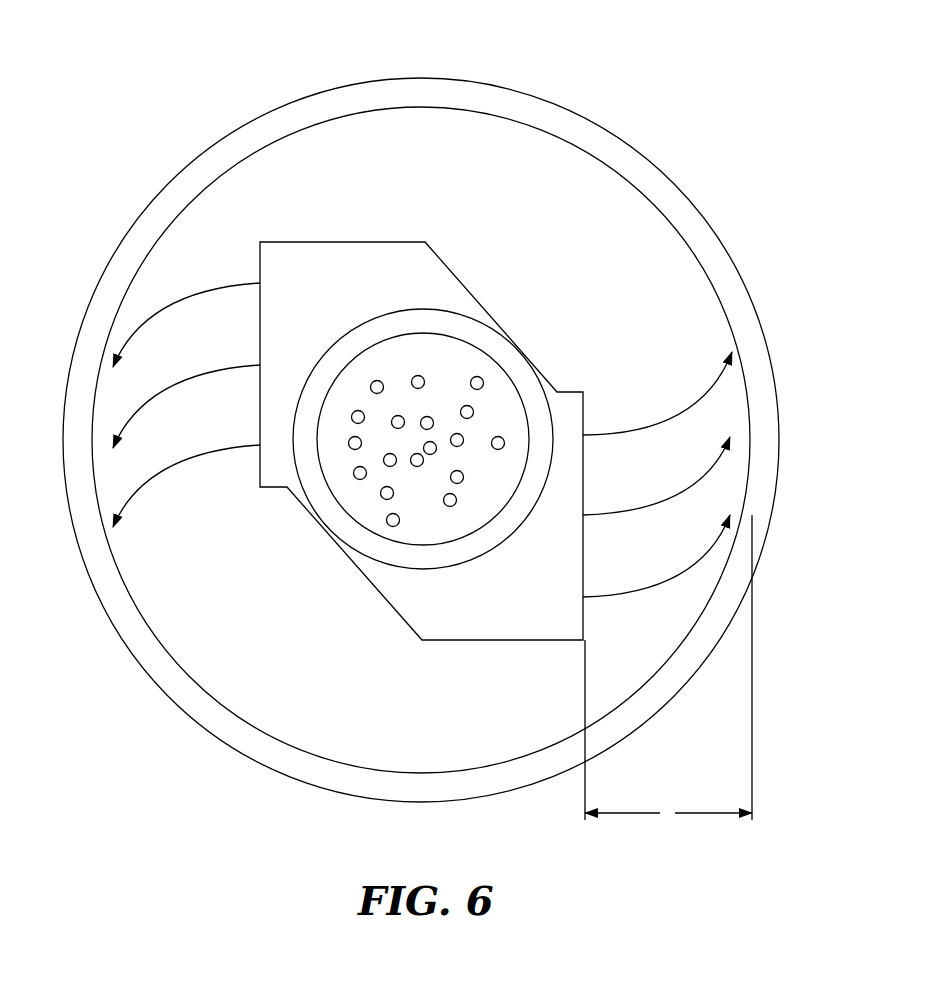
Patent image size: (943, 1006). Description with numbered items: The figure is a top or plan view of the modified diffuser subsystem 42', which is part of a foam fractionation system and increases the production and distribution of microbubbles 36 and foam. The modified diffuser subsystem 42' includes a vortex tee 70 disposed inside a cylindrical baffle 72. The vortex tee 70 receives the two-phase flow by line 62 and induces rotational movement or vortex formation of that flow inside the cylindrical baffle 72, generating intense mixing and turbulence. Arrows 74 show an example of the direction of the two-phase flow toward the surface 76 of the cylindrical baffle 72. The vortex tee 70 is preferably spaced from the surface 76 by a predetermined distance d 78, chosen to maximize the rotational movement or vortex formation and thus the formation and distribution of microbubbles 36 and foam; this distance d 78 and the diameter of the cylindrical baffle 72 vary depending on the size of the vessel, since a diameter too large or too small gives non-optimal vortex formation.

The modified diffuser subsystem 42' is at (549, 44).
The cylindrical baffle 72 is at (158, 193).
The surface 76 is at (660, 217).
The vortex tee 70 is at (336, 254).
The line 62 is at (503, 357).
The microbubbles 36 is at (461, 410).
The arrows 74 is at (208, 414).
The distance d 78 is at (667, 830).